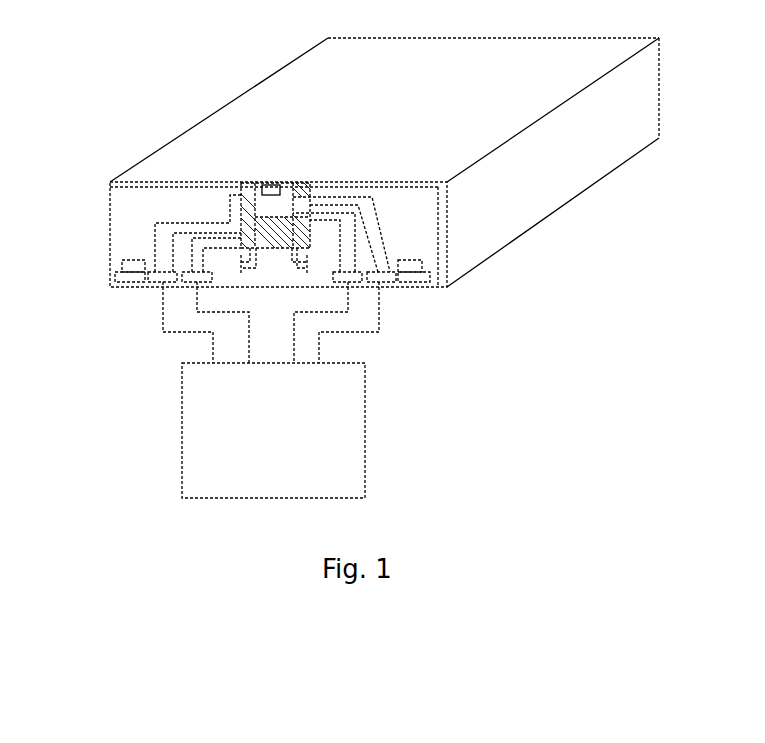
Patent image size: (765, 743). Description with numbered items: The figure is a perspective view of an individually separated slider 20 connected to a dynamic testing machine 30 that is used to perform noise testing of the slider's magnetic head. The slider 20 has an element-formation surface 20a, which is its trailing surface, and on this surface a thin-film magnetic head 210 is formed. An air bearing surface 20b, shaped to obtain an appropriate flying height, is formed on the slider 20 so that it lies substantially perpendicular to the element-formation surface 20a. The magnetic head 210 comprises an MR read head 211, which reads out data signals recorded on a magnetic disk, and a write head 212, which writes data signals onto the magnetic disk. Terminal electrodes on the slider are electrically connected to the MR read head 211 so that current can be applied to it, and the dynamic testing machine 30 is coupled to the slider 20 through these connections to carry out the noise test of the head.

The slider 20 is at (272, 52).
The element-formation surface 20a is at (110, 182).
The air bearing surface 20b is at (250, 120).
The thin-film magnetic head 210 is at (262, 182).
The MR read head 211 is at (268, 185).
The write head 212 is at (268, 193).
The dynamic testing machine 30 is at (289, 445).